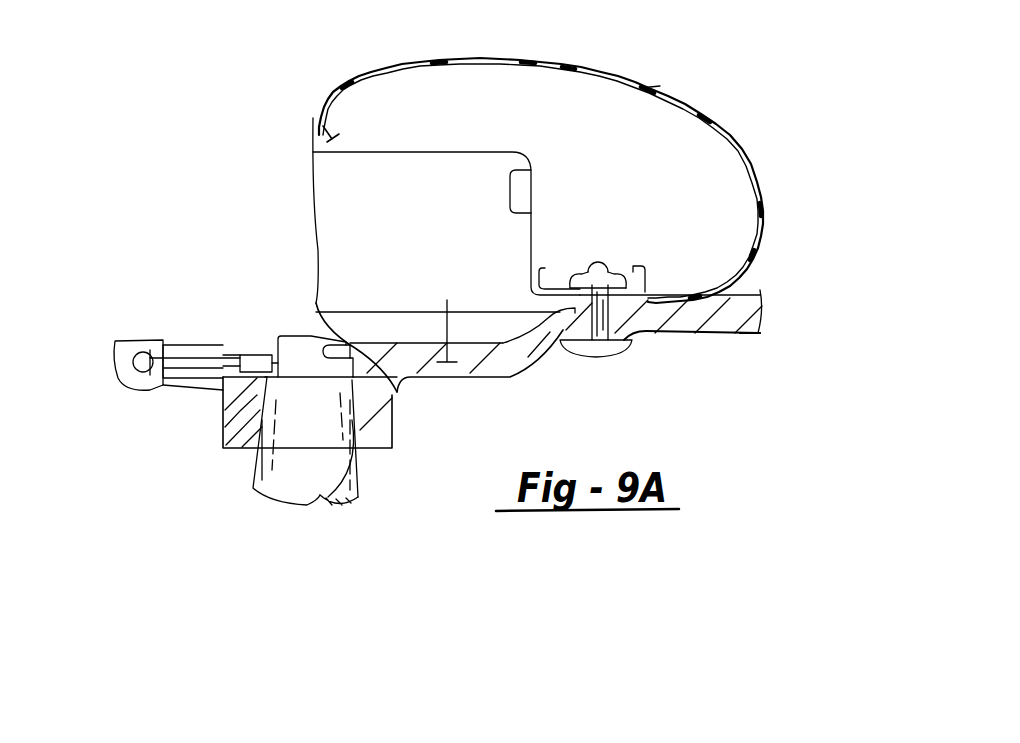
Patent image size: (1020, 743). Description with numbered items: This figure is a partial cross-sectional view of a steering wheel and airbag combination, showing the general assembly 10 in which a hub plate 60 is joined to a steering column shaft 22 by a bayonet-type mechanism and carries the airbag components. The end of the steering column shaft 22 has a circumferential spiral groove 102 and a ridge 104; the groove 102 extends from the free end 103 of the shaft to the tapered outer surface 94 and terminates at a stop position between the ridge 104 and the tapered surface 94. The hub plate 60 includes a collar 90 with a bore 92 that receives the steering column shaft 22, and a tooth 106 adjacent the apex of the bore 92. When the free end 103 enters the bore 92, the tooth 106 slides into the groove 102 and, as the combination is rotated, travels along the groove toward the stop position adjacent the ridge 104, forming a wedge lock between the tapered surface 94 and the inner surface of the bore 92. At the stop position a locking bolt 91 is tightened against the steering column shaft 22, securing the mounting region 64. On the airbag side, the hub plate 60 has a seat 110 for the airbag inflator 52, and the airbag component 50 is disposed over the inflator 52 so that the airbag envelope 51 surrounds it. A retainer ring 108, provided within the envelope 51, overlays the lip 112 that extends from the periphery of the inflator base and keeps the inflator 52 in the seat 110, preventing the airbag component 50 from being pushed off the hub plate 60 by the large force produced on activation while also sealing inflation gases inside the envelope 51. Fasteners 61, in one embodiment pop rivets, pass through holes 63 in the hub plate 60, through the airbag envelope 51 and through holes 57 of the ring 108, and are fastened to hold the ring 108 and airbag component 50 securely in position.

The assembly 10 is at (128, 342).
The steering column shaft 22 is at (257, 488).
The airbag component 50 is at (752, 135).
The airbag envelope 51 is at (650, 85).
The airbag inflator 52 is at (388, 238).
The holes of ring 57 is at (610, 278).
The hub plate 60 is at (745, 346).
The fasteners 61 is at (597, 360).
The holes in hub plate 63 is at (633, 337).
The bracket assembly 64 is at (188, 438).
The collar 90 is at (380, 430).
The locking bolt 91 is at (153, 378).
The bore 92 is at (348, 490).
The tapered outer surface 94 is at (225, 427).
The circumferential spiral groove 102 is at (330, 360).
The free end 103 is at (313, 335).
The ridge 104 is at (398, 393).
The tooth 106 is at (310, 334).
The retainer ring 108 is at (565, 278).
The seat 110 is at (556, 342).
The lip 112 is at (548, 288).